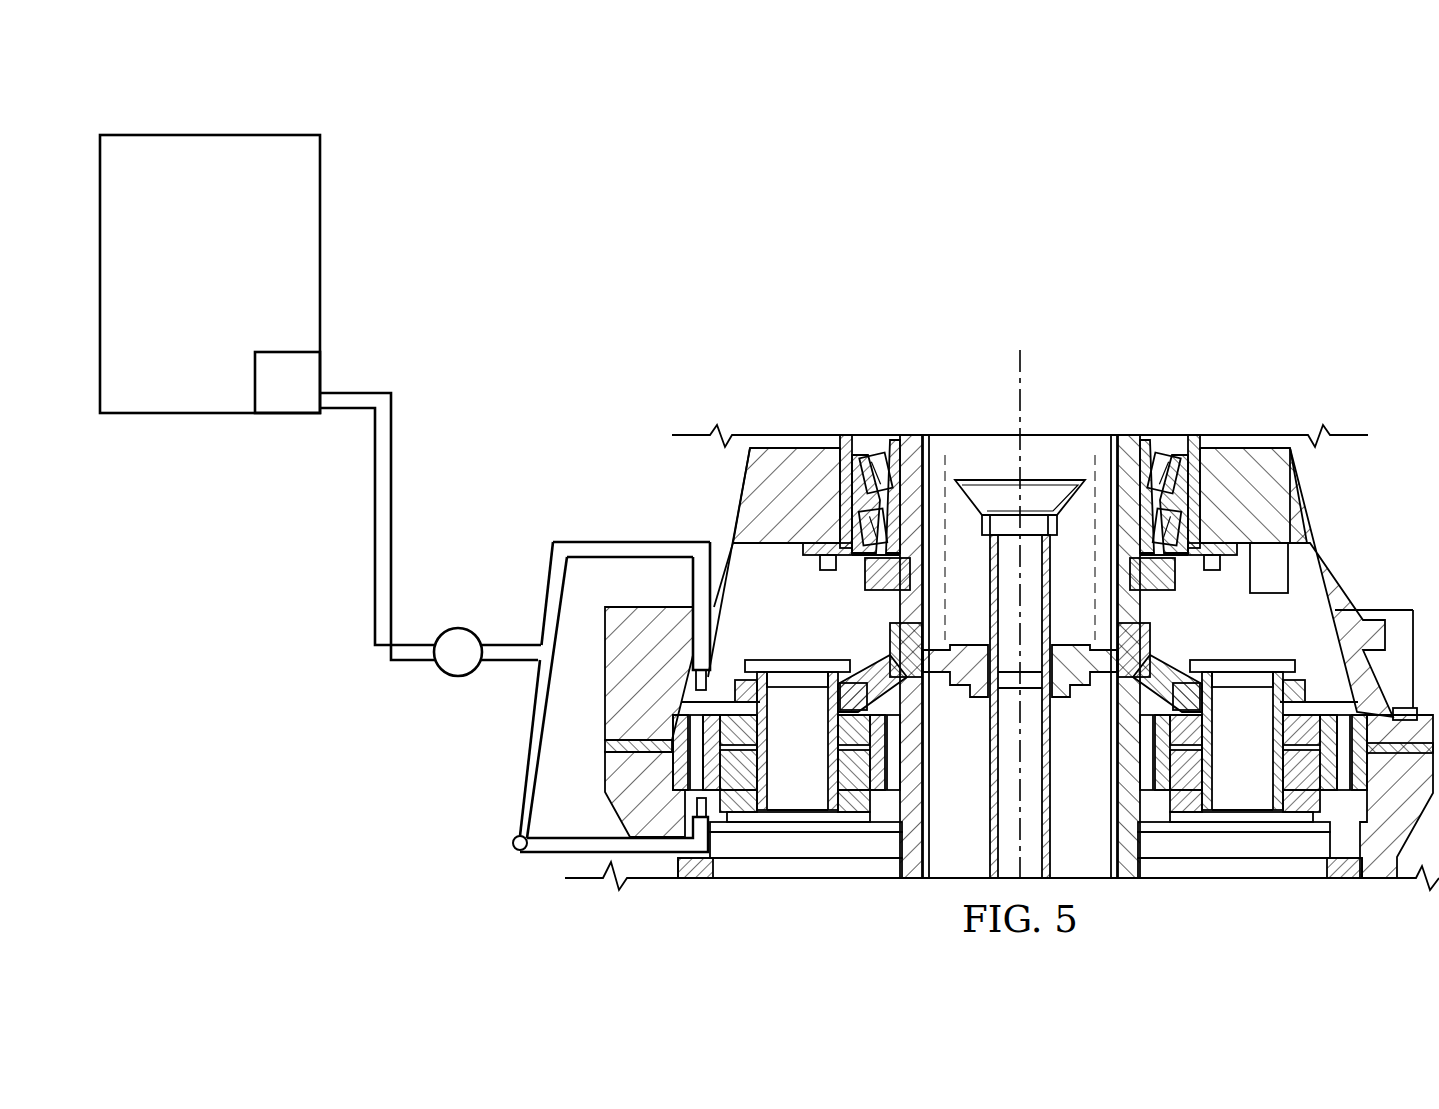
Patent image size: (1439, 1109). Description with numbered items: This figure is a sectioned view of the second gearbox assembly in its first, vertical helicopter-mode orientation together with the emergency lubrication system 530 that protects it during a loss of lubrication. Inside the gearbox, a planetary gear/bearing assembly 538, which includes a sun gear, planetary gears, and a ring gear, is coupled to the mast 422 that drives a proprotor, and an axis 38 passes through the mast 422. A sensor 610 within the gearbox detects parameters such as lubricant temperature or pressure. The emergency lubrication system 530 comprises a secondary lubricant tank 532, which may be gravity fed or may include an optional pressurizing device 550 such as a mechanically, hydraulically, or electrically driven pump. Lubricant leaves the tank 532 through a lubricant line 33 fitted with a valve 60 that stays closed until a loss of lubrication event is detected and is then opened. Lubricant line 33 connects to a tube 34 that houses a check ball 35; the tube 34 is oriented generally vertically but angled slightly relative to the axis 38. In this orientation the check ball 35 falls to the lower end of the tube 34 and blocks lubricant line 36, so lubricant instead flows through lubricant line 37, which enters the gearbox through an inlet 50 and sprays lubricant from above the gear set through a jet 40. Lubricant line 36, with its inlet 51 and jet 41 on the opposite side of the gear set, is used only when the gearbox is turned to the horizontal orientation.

The emergency lubrication system 530 is at (249, 229).
The secondary lubricant tank 532 is at (322, 276).
The pressurizing device 550 is at (255, 384).
The lubricant line 33 is at (375, 530).
The valve 60 is at (452, 678).
The tube 34 is at (549, 592).
The lubricant line 37 is at (670, 585).
The inlet 50 is at (740, 616).
The jet 40 is at (707, 688).
The check ball 35 is at (513, 845).
The lubricant line 36 is at (577, 835).
The jet 41 is at (697, 806).
The inlet 51 is at (722, 850).
The planetary gear/bearing assembly 538 is at (1002, 649).
The axis 38 is at (1014, 358).
The mast 422 is at (1052, 480).
The sensor 610 is at (1270, 596).